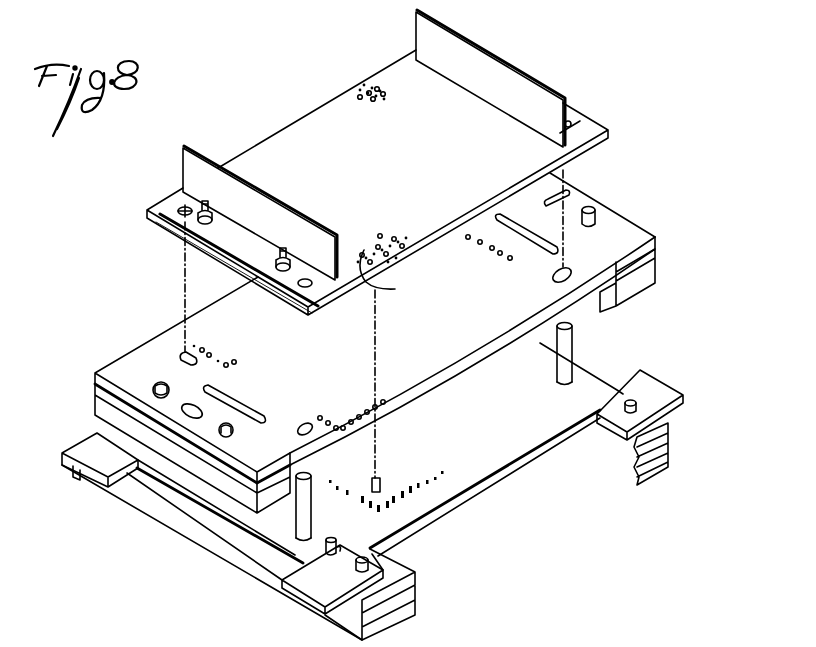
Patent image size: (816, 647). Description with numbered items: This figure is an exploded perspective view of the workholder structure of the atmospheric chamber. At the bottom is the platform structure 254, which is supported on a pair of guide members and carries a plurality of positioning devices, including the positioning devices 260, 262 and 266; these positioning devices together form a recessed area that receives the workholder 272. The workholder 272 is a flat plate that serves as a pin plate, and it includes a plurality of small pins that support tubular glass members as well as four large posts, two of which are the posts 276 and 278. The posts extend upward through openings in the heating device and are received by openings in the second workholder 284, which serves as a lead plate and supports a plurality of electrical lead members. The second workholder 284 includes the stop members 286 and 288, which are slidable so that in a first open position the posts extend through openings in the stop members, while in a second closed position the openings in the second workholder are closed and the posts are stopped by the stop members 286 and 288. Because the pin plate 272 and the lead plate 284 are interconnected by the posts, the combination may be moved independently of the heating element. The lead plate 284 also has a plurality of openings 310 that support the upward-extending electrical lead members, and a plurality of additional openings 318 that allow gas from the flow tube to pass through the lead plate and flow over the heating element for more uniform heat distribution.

The platform structure 254 is at (393, 587).
The positioning device 260 is at (105, 455).
The positioning device 262 is at (322, 587).
The positioning device 266 is at (652, 387).
The workholder 272 is at (562, 412).
The large post 276 is at (300, 518).
The large post 278 is at (565, 343).
The second workholder 284 is at (393, 72).
The stop member 286 is at (203, 167).
The stop member 288 is at (490, 72).
The openings 310 is at (412, 243).
The additional openings 318 is at (378, 250).